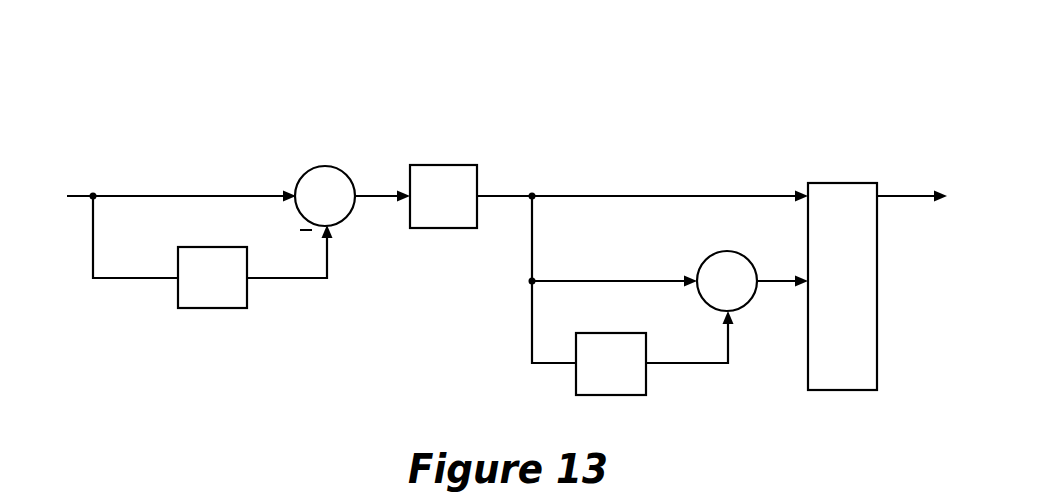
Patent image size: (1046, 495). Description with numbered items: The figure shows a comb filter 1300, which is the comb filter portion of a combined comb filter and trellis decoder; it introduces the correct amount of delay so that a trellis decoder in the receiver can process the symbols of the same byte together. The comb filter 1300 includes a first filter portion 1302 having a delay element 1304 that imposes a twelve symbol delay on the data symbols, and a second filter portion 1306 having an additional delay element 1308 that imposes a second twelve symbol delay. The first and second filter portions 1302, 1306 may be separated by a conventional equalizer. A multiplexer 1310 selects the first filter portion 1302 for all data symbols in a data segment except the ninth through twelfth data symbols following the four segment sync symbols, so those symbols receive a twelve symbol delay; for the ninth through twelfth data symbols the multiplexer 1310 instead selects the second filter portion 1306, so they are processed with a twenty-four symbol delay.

The comb filter 1300 is at (837, 96).
The first filter portion 1302 is at (242, 145).
The delay element 1304 is at (198, 246).
The second filter portion 1306 is at (636, 143).
The additional delay element 1308 is at (617, 333).
The multiplexer 1310 is at (851, 183).